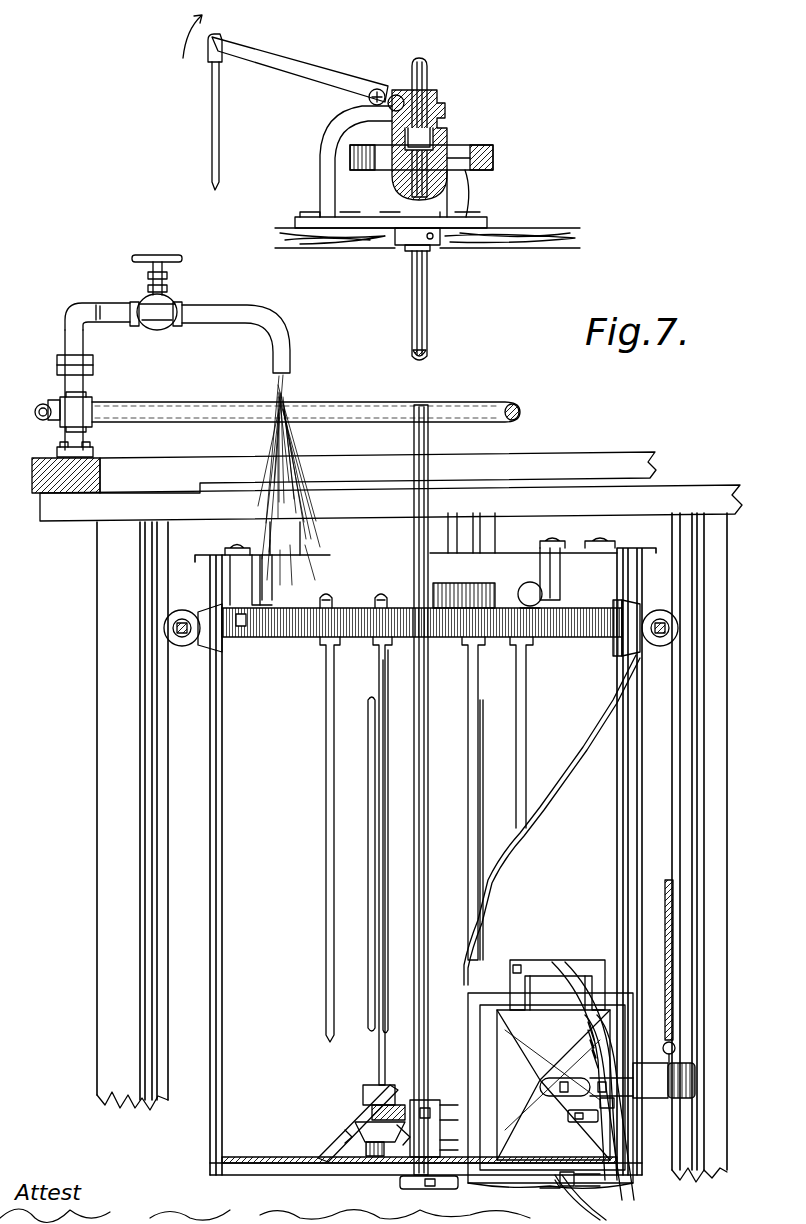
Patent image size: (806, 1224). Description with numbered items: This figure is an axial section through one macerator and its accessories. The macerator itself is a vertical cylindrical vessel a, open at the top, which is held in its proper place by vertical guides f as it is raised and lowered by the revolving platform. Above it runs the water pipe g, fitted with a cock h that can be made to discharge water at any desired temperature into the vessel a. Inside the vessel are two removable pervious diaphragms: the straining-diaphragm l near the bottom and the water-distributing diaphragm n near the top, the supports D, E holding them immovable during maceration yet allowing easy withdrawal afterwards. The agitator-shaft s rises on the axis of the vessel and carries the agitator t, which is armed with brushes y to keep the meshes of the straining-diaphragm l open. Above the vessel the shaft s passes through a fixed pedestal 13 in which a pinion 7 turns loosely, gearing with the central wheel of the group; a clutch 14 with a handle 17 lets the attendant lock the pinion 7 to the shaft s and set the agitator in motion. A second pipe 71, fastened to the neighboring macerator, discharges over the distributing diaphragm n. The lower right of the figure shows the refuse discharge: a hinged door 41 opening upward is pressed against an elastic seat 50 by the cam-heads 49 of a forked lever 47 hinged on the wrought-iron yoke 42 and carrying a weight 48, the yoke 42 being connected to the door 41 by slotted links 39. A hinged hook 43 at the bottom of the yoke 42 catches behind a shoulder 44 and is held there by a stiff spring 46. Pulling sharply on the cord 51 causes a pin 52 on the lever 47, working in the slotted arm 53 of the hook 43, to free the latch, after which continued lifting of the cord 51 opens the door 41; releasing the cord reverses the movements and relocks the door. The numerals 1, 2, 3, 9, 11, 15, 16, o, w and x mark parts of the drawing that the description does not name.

The nuts on rods 1 is at (353, 593).
The carriage cross bar 2 is at (422, 636).
The rods 3 is at (420, 899).
The pinion 7 is at (431, 157).
The bearing block 9 is at (448, 140).
The pin 11 is at (433, 240).
The fixed pedestal 13 is at (427, 178).
The clutch 14 is at (435, 97).
The yoke bracket 15 is at (557, 976).
The rod lower end 16 is at (430, 350).
The handle 17 is at (293, 102).
The slotted links 39 is at (565, 1087).
The hinged door 41 is at (553, 1085).
The yoke 42 is at (584, 1071).
The hinged hook 43 is at (550, 1197).
The shoulder 44 is at (575, 1172).
The stiff spring 46 is at (583, 1199).
The forked lever 47 is at (611, 1087).
The weight 48 is at (664, 1080).
The cam-heads 49 is at (582, 1110).
The elastic seat 50 is at (550, 1090).
The cord 51 is at (664, 960).
The pin 52 is at (552, 1080).
The slotted arm 53 is at (626, 1116).
The second pipe 71 is at (530, 595).
The vertical cylindrical vessel a is at (425, 861).
The diaphragm support D is at (412, 576).
The diaphragm support E is at (411, 538).
The vertical guides f is at (412, 847).
The water pipe g is at (264, 380).
The cock h is at (156, 280).
The straining-diaphragm l is at (419, 1148).
The water-distributing diaphragm n is at (470, 596).
The wheel o is at (603, 640).
The agitator-shaft s is at (412, 738).
The agitator t is at (429, 1144).
The tube w is at (492, 860).
The wedge x is at (382, 1115).
The brushes y is at (377, 1139).